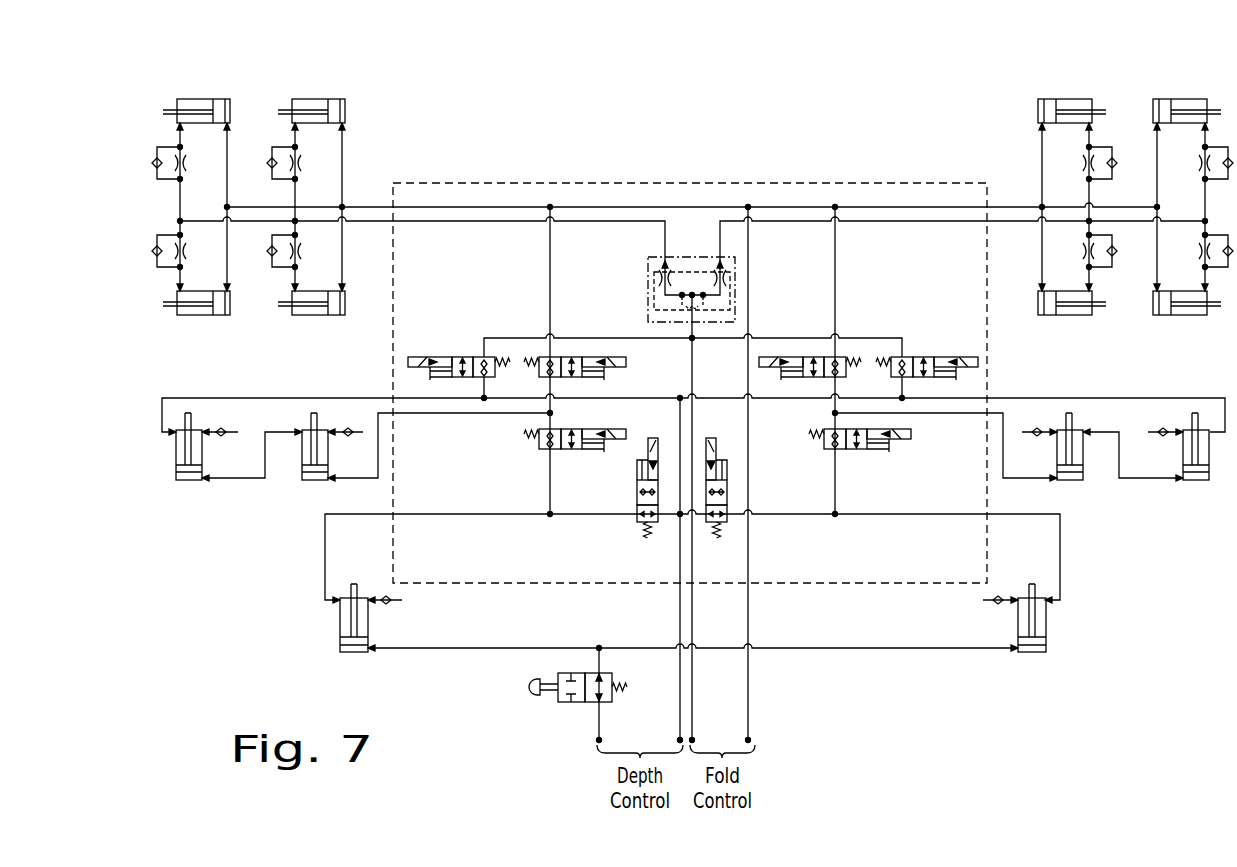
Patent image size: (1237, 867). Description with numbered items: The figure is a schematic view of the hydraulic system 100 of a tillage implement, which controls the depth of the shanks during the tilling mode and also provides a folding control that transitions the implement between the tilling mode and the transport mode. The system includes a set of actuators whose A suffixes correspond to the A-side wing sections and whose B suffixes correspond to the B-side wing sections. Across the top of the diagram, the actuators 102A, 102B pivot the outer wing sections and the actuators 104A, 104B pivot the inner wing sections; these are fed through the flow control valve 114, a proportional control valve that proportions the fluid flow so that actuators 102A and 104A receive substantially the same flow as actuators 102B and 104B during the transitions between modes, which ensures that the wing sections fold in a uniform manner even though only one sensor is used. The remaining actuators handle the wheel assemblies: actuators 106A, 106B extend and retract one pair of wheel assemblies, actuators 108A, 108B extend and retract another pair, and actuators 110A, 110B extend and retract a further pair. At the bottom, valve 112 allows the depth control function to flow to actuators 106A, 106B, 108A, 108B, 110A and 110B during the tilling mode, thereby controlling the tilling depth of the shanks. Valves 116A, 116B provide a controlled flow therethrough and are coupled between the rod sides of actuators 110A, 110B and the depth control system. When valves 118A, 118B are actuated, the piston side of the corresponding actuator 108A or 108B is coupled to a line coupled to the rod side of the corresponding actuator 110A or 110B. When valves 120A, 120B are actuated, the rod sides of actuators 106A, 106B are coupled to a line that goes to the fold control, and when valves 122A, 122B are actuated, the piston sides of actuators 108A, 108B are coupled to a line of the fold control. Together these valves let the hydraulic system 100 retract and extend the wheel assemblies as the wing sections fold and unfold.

The hydraulic system 100 is at (832, 135).
The actuator 102A is at (1185, 99).
The actuator 102B is at (209, 99).
The actuator 104A is at (1068, 99).
The actuator 104B is at (314, 99).
The actuator 106A is at (1200, 481).
The actuator 106B is at (185, 481).
The actuator 108A is at (1075, 481).
The actuator 108B is at (310, 481).
The actuator 110A is at (1045, 635).
The actuator 110B is at (340, 627).
The valve 112 is at (567, 703).
The proportional control valve 114 is at (648, 275).
The valve 116A is at (727, 492).
The valve 116B is at (637, 492).
The valve 118A is at (852, 452).
The valve 118B is at (545, 452).
The valve 120A is at (917, 357).
The valve 120B is at (456, 357).
The valve 122A is at (810, 357).
The valve 122B is at (578, 378).